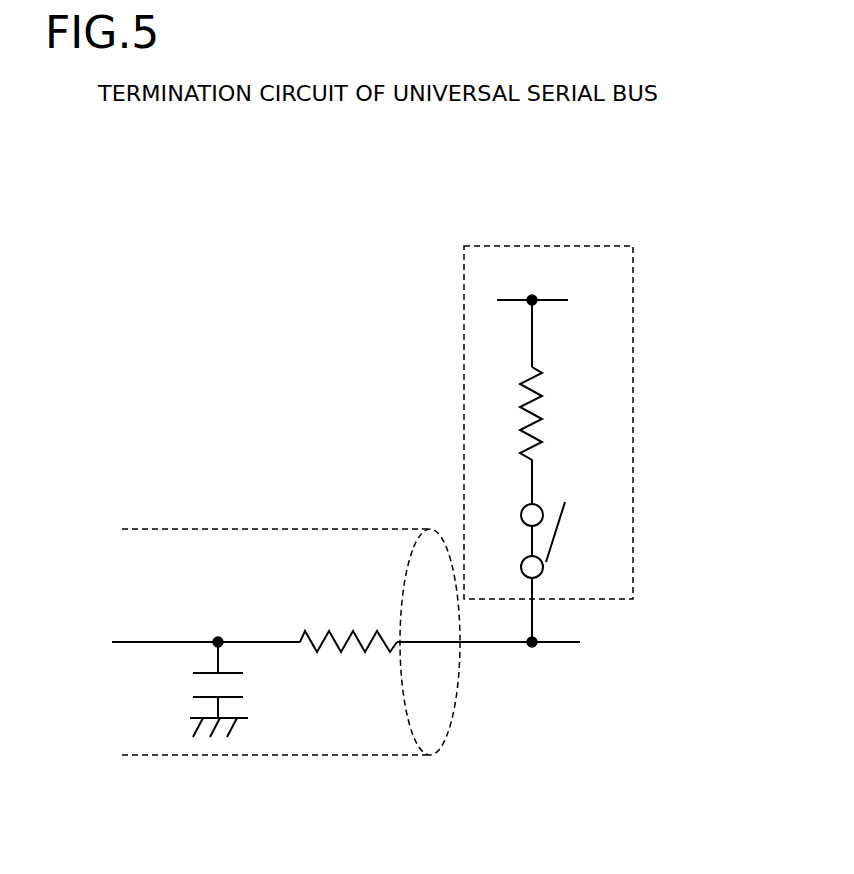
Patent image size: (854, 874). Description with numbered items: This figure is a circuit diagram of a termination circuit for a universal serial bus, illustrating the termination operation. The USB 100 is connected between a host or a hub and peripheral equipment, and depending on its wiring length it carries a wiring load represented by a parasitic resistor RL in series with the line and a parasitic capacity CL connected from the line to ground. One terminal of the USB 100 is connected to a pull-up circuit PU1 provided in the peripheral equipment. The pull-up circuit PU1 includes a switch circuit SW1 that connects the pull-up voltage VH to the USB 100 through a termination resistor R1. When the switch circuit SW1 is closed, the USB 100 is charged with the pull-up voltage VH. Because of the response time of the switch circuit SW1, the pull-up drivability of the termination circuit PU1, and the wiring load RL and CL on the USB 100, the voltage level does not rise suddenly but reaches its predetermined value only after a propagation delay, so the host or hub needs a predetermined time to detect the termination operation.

The USB 100 is at (262, 545).
The parasitic resistor RL is at (348, 626).
The parasitic capacity CL is at (234, 689).
The pull-up circuit PU1 is at (633, 281).
The pull-up voltage VH is at (532, 314).
The termination resistor R1 is at (514, 435).
The switch circuit SW1 is at (566, 572).